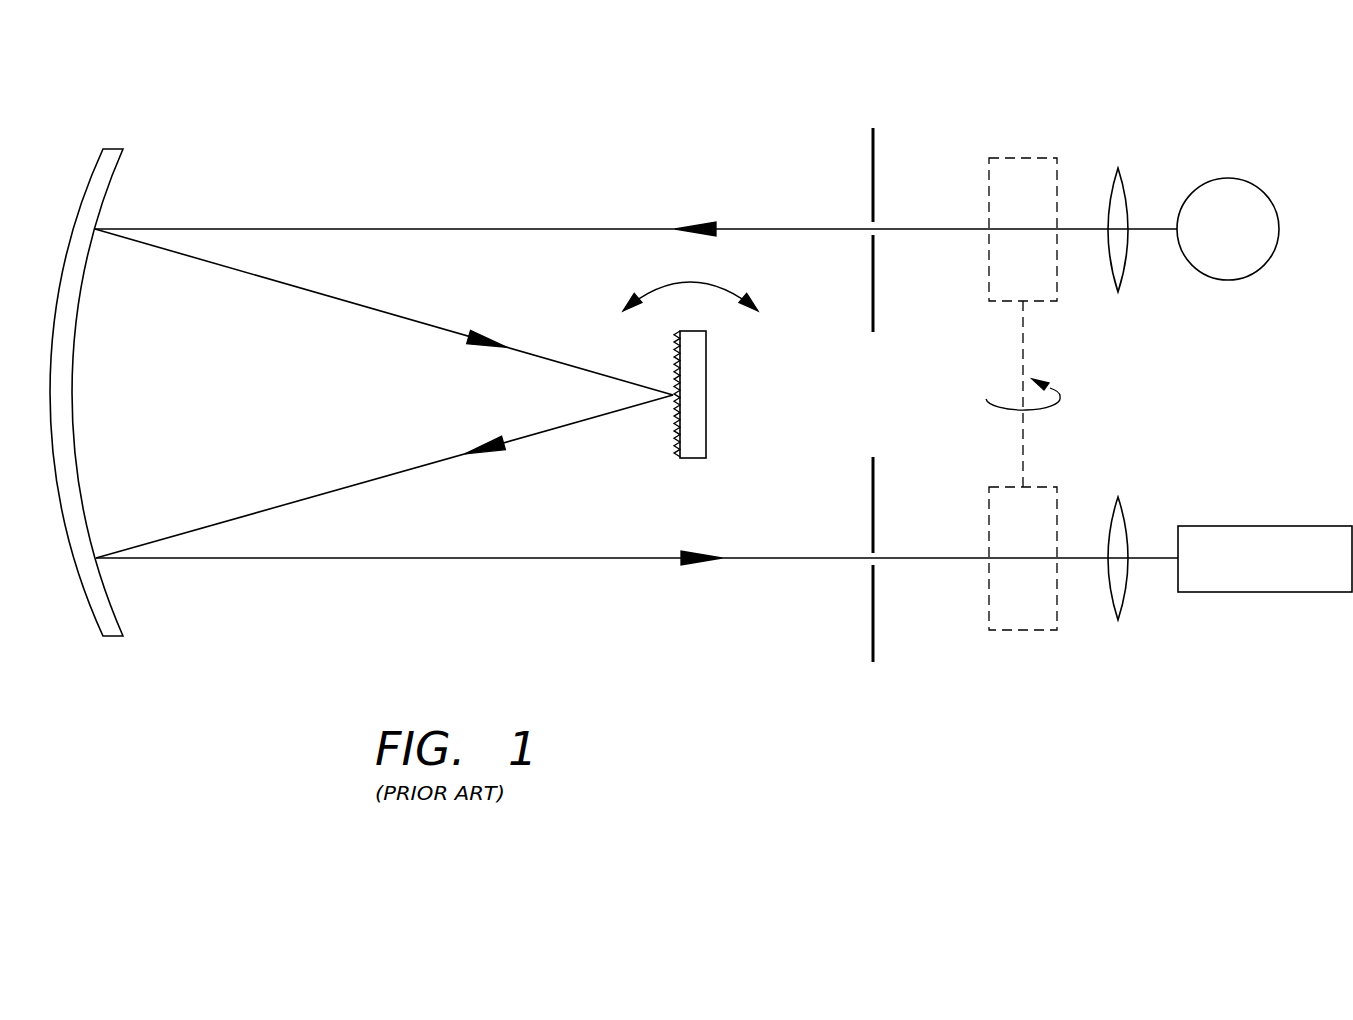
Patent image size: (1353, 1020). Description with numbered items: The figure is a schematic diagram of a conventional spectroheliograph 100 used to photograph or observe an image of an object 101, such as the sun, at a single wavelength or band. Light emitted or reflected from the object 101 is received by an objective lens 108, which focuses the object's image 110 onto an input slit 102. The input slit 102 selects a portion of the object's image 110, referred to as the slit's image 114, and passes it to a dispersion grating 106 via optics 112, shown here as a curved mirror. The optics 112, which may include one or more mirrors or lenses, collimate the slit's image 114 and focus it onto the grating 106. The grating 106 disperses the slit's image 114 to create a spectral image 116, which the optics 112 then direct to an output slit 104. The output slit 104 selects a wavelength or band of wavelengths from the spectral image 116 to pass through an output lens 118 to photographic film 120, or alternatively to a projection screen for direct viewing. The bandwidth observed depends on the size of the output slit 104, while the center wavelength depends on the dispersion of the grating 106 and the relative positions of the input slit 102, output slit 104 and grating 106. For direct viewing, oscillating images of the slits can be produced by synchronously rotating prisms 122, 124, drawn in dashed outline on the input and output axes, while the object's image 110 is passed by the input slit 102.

The spectroheliograph 100 is at (391, 86).
The object 101 is at (1225, 175).
The input slit 102 is at (872, 158).
The output slit 104 is at (872, 630).
The dispersion grating 106 is at (706, 431).
The objective lens 108 is at (1117, 168).
The object's image 110 is at (905, 231).
The optics 112 is at (112, 149).
The slit's image 114 is at (492, 229).
The spectral image 116 is at (407, 470).
The output lens 118 is at (1118, 620).
The photographic film 120 is at (1258, 526).
The prism 122 is at (1023, 158).
The prism 124 is at (1023, 630).